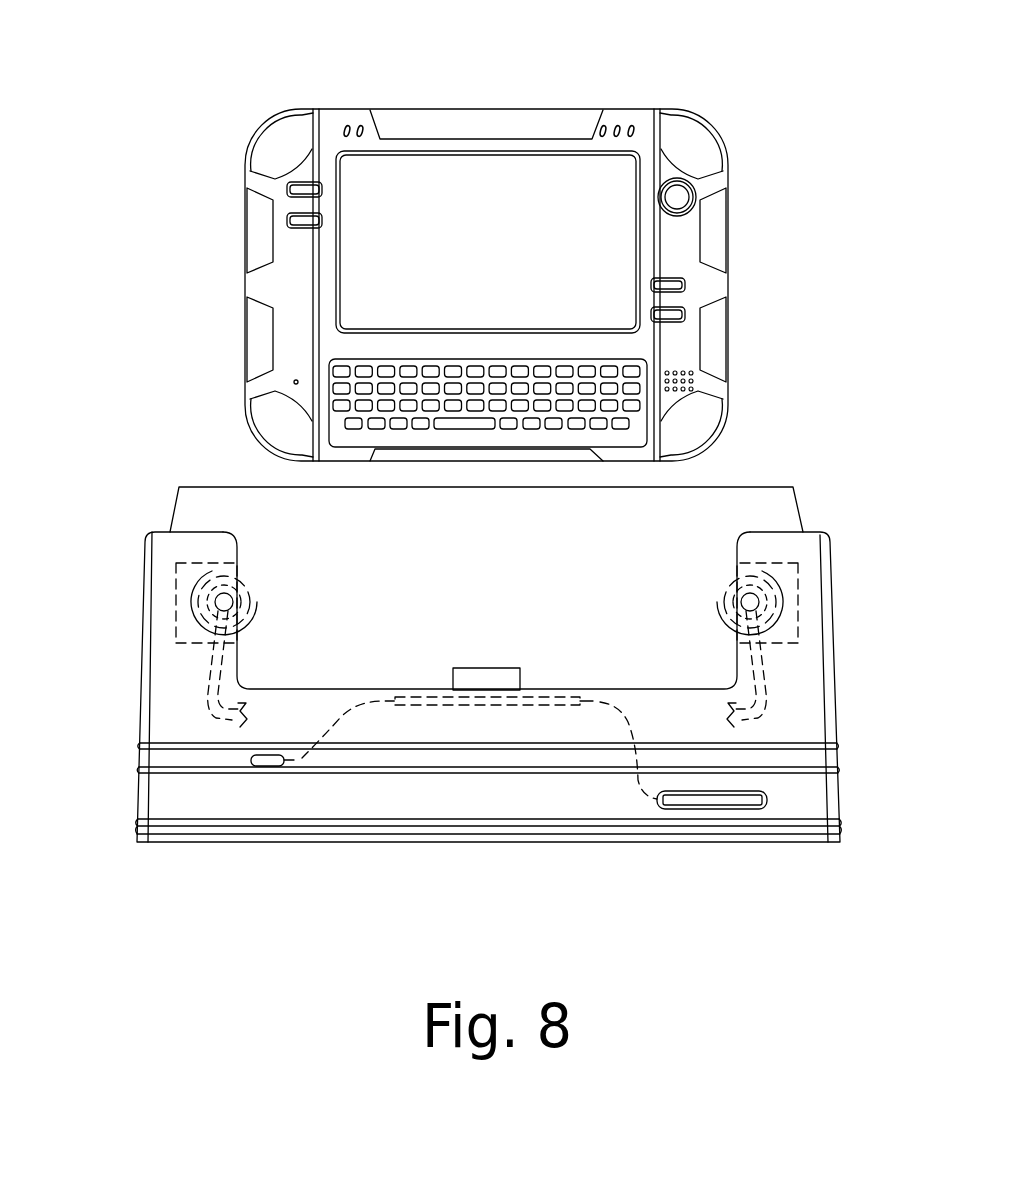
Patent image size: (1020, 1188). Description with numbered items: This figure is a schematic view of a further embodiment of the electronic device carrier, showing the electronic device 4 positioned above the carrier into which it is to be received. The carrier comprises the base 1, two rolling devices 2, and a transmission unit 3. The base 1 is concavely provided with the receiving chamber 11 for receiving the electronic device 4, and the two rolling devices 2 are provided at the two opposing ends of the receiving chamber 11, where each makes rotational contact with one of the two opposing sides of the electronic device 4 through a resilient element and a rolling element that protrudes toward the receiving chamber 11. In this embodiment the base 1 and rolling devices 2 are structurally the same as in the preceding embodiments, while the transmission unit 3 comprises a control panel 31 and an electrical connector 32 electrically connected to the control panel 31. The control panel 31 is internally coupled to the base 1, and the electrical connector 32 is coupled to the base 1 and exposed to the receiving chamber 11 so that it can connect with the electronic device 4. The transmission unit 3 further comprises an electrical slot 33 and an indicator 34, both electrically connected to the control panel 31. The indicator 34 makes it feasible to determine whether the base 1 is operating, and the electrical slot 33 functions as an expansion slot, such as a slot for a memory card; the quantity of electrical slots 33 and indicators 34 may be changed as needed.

The base 1 is at (176, 469).
The rolling device 2 is at (171, 589).
The transmission unit 3 is at (570, 733).
The electronic device 4 is at (700, 108).
The receiving chamber 11 is at (705, 671).
The control panel 31 is at (488, 705).
The electrical connector 32 is at (488, 668).
The electrical slot 33 is at (710, 800).
The indicator 34 is at (272, 763).